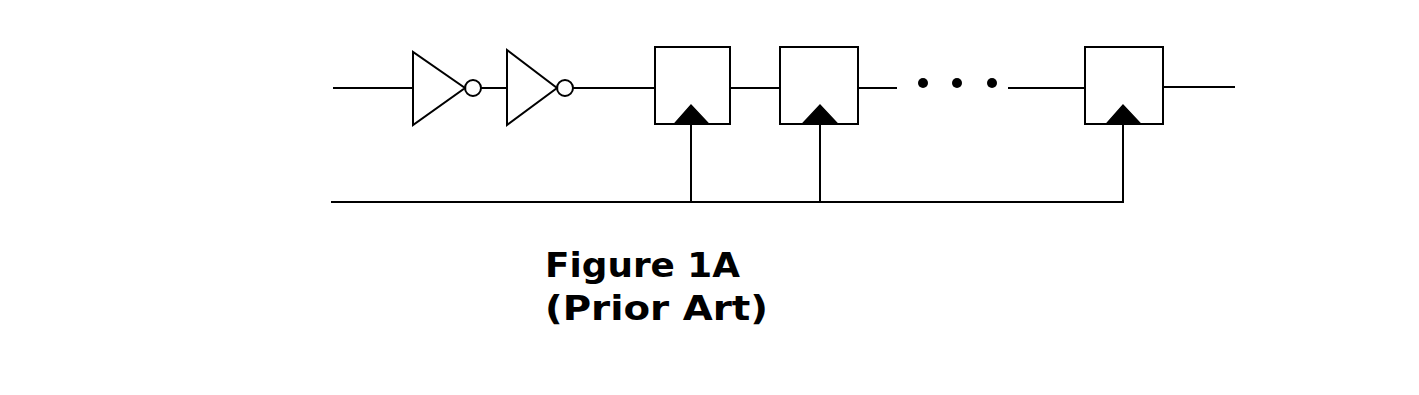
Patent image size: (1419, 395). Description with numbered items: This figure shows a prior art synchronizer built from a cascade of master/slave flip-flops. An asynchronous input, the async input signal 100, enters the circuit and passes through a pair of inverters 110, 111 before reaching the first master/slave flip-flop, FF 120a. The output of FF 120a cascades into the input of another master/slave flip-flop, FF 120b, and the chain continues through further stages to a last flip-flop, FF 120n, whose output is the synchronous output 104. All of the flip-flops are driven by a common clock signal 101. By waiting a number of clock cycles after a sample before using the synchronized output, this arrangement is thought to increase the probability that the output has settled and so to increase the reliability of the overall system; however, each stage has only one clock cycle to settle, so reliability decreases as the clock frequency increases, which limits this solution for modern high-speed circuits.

The async input signal 100 is at (309, 99).
The clock signal 101 is at (663, 185).
The synchronous output signal 104 is at (1280, 96).
The inverter 110 is at (432, 71).
The inverter 111 is at (577, 70).
The master/slave flip-flop 120a is at (717, 70).
The master/slave flip-flop 120b is at (838, 70).
The flip-flop 120n is at (1136, 69).